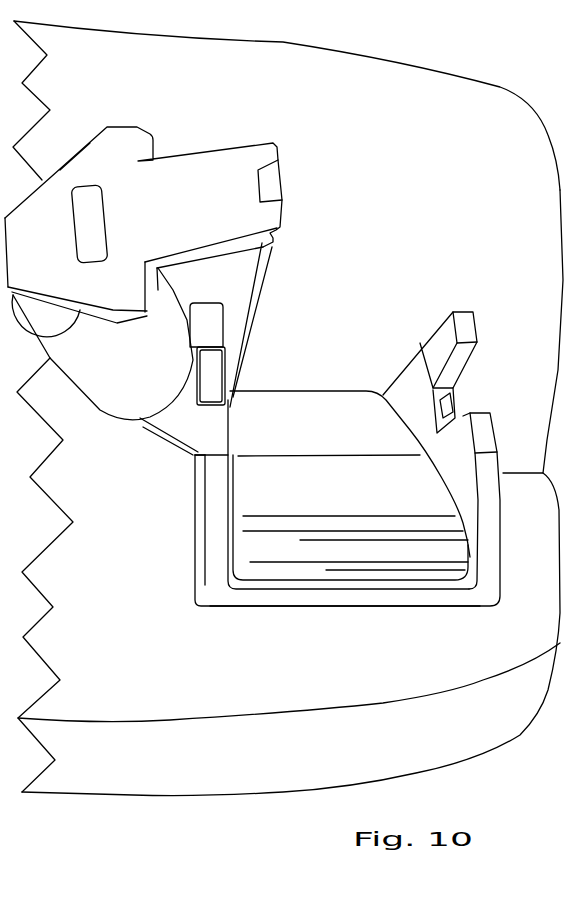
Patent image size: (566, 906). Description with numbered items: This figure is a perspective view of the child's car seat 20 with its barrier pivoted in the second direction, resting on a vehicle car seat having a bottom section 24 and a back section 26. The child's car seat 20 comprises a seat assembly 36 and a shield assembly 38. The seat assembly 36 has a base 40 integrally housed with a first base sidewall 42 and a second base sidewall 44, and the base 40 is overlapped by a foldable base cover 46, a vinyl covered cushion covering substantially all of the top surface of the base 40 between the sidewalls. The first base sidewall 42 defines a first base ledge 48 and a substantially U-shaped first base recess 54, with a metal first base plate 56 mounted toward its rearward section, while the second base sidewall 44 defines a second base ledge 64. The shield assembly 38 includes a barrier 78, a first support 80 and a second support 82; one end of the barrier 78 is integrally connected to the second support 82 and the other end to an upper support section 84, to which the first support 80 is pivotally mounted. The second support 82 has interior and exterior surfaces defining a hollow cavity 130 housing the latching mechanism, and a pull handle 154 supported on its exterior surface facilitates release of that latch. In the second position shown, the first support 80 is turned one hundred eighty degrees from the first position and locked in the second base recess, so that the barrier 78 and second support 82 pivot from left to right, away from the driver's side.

The child's car seat 20 is at (396, 270).
The bottom section 24 is at (376, 669).
The back section 26 is at (410, 126).
The seat assembly 36 is at (318, 552).
The shield assembly 38 is at (179, 234).
The base 40 is at (239, 613).
The first base sidewall 42 is at (458, 467).
The second base sidewall 44 is at (200, 480).
The base cover 46 is at (353, 500).
The first base ledge 48 is at (488, 543).
The first base recess 54 is at (443, 372).
The first base plate 56 is at (427, 405).
The second base ledge 64 is at (213, 562).
The barrier 78 is at (127, 378).
The first support 80 is at (237, 407).
The second support 82 is at (98, 160).
The upper support section 84 is at (176, 420).
The hollow cavity 130 is at (50, 265).
The pull handle 154 is at (277, 181).